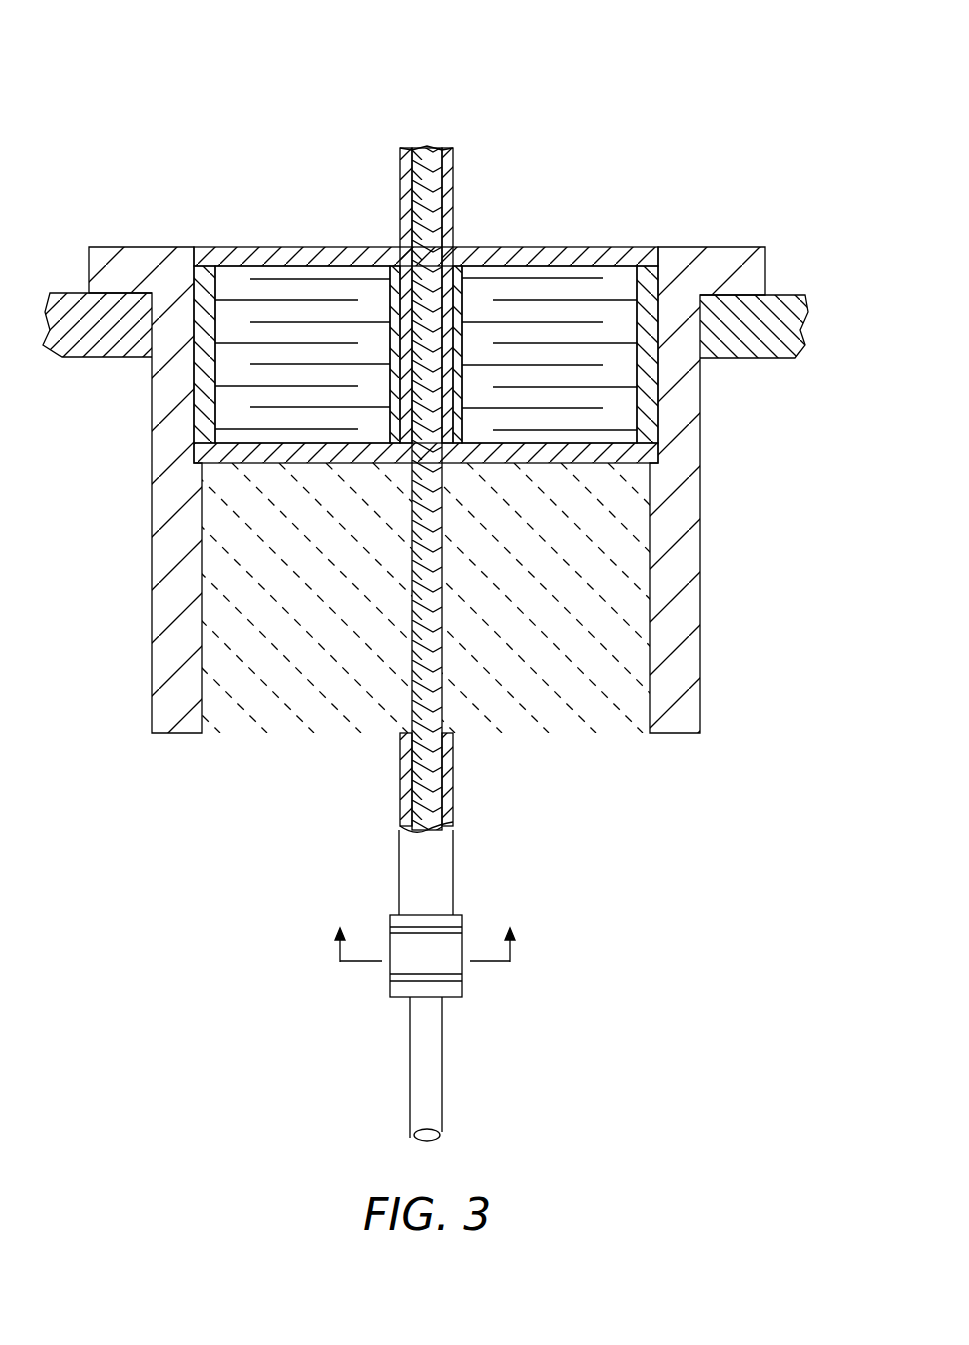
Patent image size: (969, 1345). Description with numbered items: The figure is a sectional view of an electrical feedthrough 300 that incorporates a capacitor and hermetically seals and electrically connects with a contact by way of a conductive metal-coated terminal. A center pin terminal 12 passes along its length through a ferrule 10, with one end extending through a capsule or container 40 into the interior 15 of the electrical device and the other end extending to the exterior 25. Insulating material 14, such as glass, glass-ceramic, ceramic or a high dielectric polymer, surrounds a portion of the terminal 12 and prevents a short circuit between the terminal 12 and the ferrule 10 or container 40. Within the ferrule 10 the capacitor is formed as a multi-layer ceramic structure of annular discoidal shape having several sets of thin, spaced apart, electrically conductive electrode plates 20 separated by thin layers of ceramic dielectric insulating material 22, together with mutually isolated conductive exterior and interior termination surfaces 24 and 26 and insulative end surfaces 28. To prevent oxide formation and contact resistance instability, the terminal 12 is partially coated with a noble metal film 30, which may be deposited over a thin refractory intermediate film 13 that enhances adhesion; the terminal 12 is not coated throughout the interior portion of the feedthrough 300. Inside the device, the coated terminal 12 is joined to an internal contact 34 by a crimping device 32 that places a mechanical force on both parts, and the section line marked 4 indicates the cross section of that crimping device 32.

The feedthrough 300 is at (156, 88).
The ferrule 10 is at (755, 252).
The center pin terminal 12 is at (440, 150).
The intermediate film 13 is at (415, 150).
The insulating material 14 is at (640, 575).
The interior 15 is at (739, 890).
The electrode plates 20 is at (606, 340).
The ceramic dielectric insulating material 22 is at (208, 256).
The exterior termination surface 24 is at (655, 397).
The exterior 25 is at (767, 148).
The interior termination surface 26 is at (400, 275).
The insulative end surfaces 28 is at (310, 255).
The noble metal film 30 is at (447, 190).
The crimping device 32 is at (455, 925).
The internal contact 34 is at (435, 1115).
The container 40 is at (800, 310).
The section line 4- 4 is at (424, 944).